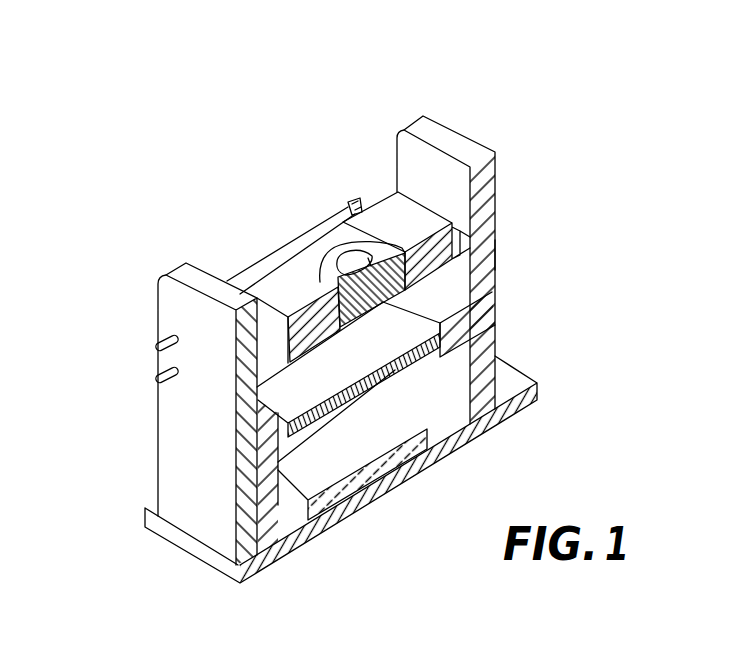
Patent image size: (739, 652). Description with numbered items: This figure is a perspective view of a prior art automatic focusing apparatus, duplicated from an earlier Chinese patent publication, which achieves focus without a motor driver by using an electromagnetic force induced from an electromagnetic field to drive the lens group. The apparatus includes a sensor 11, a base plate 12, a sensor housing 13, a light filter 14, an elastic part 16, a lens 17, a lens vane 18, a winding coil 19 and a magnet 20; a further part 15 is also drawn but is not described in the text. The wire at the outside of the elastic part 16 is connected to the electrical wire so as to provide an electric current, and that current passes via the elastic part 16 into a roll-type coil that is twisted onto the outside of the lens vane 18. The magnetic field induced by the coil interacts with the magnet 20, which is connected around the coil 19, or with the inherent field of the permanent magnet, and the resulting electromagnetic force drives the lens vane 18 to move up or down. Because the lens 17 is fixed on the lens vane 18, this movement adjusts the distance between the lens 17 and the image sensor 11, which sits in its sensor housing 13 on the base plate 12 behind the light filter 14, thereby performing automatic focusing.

The sensor 11 is at (372, 450).
The base plate 12 is at (290, 557).
The sensor housing 13 is at (497, 337).
The light filter 14 is at (378, 353).
The left side post 15 is at (201, 283).
The elastic part 16 is at (158, 332).
The lens 17 is at (345, 208).
The lens vane 18 is at (282, 280).
The winding coil 19 is at (495, 254).
The magnet 20 is at (465, 140).